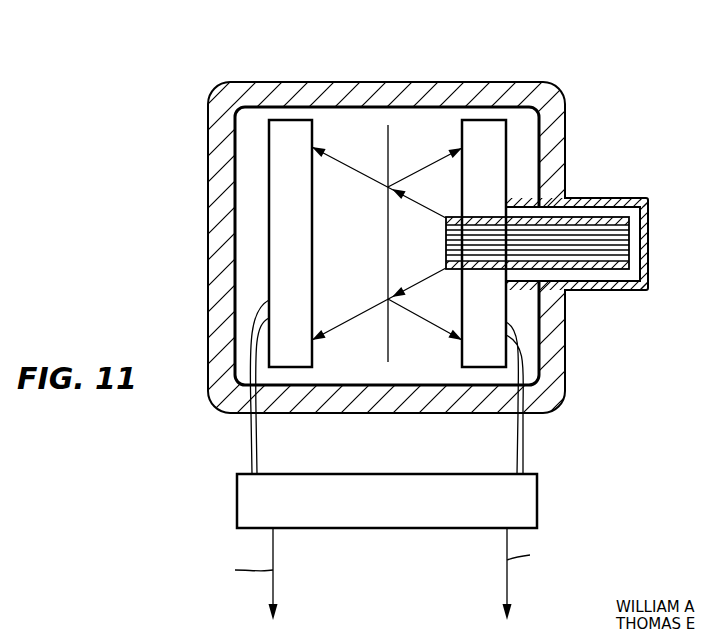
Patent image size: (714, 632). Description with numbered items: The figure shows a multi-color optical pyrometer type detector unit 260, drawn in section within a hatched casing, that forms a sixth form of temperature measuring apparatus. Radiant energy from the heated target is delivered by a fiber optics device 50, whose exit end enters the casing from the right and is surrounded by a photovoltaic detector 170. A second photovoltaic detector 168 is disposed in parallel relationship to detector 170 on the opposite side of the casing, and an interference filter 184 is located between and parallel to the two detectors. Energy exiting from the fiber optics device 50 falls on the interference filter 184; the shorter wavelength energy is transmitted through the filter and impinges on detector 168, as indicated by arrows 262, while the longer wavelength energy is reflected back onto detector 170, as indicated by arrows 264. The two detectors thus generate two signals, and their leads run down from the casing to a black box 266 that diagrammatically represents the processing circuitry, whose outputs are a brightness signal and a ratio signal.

The multi-color optical pyrometer type detector unit 260 is at (200, 91).
The interference filter 184 is at (387, 128).
The arrows 264 is at (432, 160).
The photovoltaic detector 168 is at (268, 170).
The photovoltaic detector 170 is at (506, 150).
The fiber optics device 50 is at (578, 230).
The arrows 262 is at (350, 316).
The black box 266 is at (538, 490).